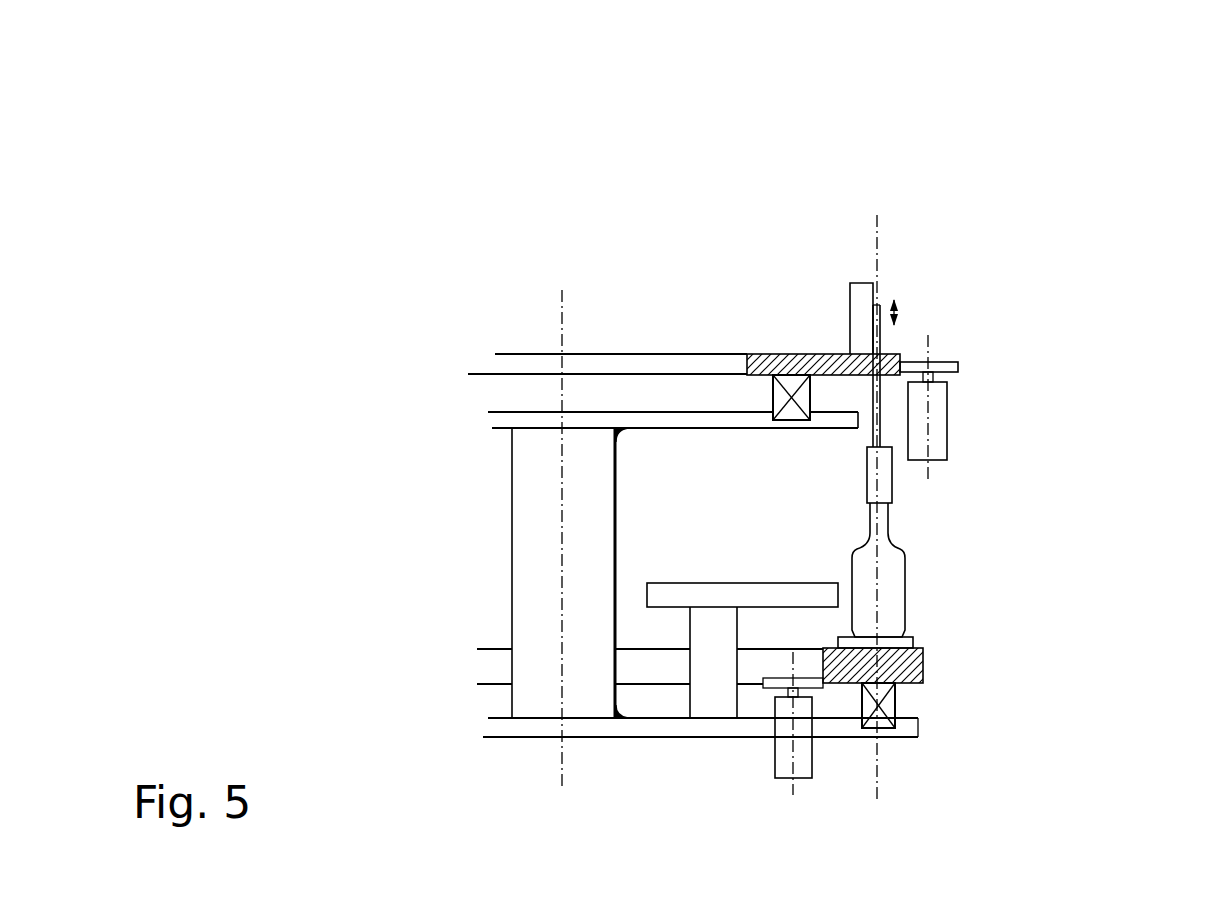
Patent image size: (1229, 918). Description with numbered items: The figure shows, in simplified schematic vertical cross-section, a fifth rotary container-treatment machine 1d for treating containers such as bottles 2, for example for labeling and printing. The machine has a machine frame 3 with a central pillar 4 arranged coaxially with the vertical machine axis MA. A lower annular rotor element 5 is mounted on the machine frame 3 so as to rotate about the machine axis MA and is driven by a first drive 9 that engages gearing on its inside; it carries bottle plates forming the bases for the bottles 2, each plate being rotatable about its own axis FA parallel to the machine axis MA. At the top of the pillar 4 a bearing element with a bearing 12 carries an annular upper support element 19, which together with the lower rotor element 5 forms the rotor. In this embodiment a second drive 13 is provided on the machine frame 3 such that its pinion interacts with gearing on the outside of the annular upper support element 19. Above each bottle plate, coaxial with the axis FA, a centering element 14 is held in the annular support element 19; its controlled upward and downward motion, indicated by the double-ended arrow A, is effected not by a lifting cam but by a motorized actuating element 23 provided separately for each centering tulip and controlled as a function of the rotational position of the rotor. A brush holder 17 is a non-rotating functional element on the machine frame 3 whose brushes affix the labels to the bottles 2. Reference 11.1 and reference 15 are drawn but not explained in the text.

The fifth container-treatment machine 1d is at (363, 308).
The machine axis MA is at (555, 298).
The carrier beam 11.1 is at (613, 412).
The bearing 12 is at (728, 246).
The annular upper support element 19 is at (813, 353).
The motorized actuating element 23 is at (864, 259).
The axis of bottle plate FA is at (882, 250).
The double-ended arrow A is at (913, 315).
The second drive 13 is at (937, 410).
The centering element 14 is at (905, 490).
The filling position 15 is at (952, 545).
The bottle 2 is at (880, 578).
The lower annular rotor element 5 is at (925, 662).
The central pillar 4 is at (523, 537).
The machine frame 3 is at (658, 753).
The brush holder 17 is at (760, 593).
The first drive 9 is at (784, 752).